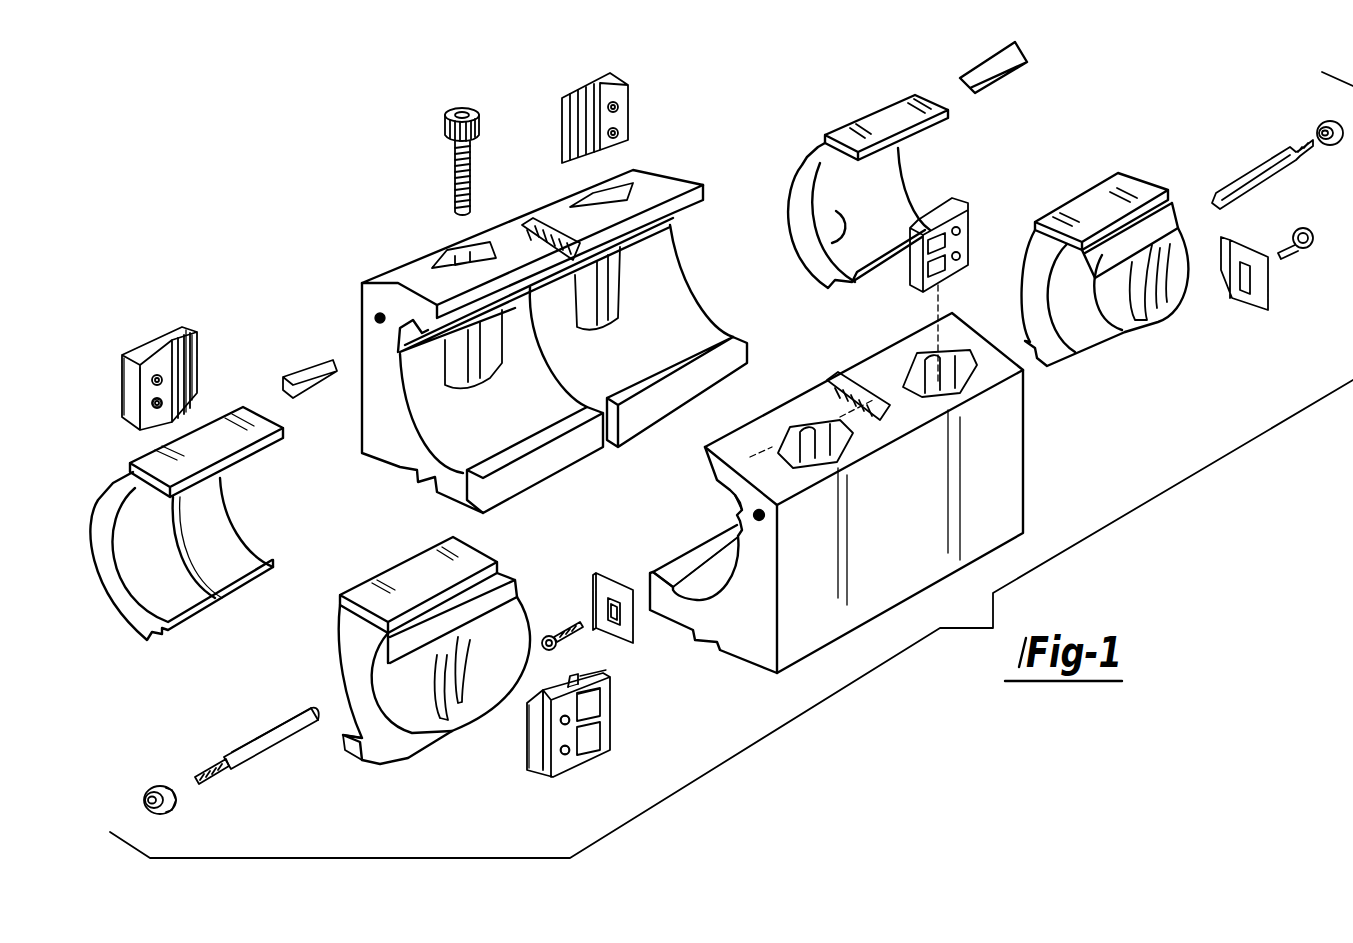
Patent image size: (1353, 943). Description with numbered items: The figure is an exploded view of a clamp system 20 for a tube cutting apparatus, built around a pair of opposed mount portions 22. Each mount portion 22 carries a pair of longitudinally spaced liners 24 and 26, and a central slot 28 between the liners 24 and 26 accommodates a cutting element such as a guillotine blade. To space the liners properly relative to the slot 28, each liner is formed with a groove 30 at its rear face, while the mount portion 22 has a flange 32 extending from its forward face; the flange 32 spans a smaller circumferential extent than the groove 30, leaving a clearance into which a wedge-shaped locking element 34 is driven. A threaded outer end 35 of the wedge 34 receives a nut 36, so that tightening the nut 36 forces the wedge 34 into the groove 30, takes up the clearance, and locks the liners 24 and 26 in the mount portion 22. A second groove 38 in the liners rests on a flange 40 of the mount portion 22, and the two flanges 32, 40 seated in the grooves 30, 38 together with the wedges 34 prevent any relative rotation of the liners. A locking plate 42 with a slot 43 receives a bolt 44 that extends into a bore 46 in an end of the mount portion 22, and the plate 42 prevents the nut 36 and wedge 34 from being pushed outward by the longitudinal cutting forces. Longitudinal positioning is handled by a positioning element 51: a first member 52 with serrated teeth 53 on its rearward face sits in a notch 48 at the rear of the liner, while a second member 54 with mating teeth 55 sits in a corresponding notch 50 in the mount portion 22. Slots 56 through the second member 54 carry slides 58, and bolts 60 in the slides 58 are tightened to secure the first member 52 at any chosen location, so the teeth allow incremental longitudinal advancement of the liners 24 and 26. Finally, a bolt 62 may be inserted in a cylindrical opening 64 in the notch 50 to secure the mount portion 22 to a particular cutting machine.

The clamp system 20 is at (731, 465).
The mount portion 22 is at (1008, 456).
The liner 24 is at (235, 540).
The liner 26 is at (832, 215).
The central slot 28 is at (553, 370).
The groove 30 is at (505, 608).
The flange 32 is at (725, 465).
The wedge-shaped locking element 34 is at (300, 714).
The threaded outer end 35 is at (210, 773).
The nut 36 is at (150, 792).
The second groove 38 is at (333, 775).
The flange 40 is at (670, 570).
The locking plate 42 is at (590, 579).
The slot 43 is at (610, 620).
The bolt 44 is at (542, 652).
The bore 46 is at (757, 523).
The notch 48 is at (463, 712).
The notch 50 is at (445, 258).
The positioning element 51 is at (556, 81).
The first member 52 is at (165, 390).
The serrated teeth 53 is at (130, 390).
The second member 54 is at (160, 340).
The teeth 55 is at (203, 366).
The slot 56 is at (597, 733).
The slide 58 is at (566, 763).
The bolt 60 is at (160, 423).
The bolt 62 is at (442, 133).
The cylindrical opening 64 is at (455, 250).